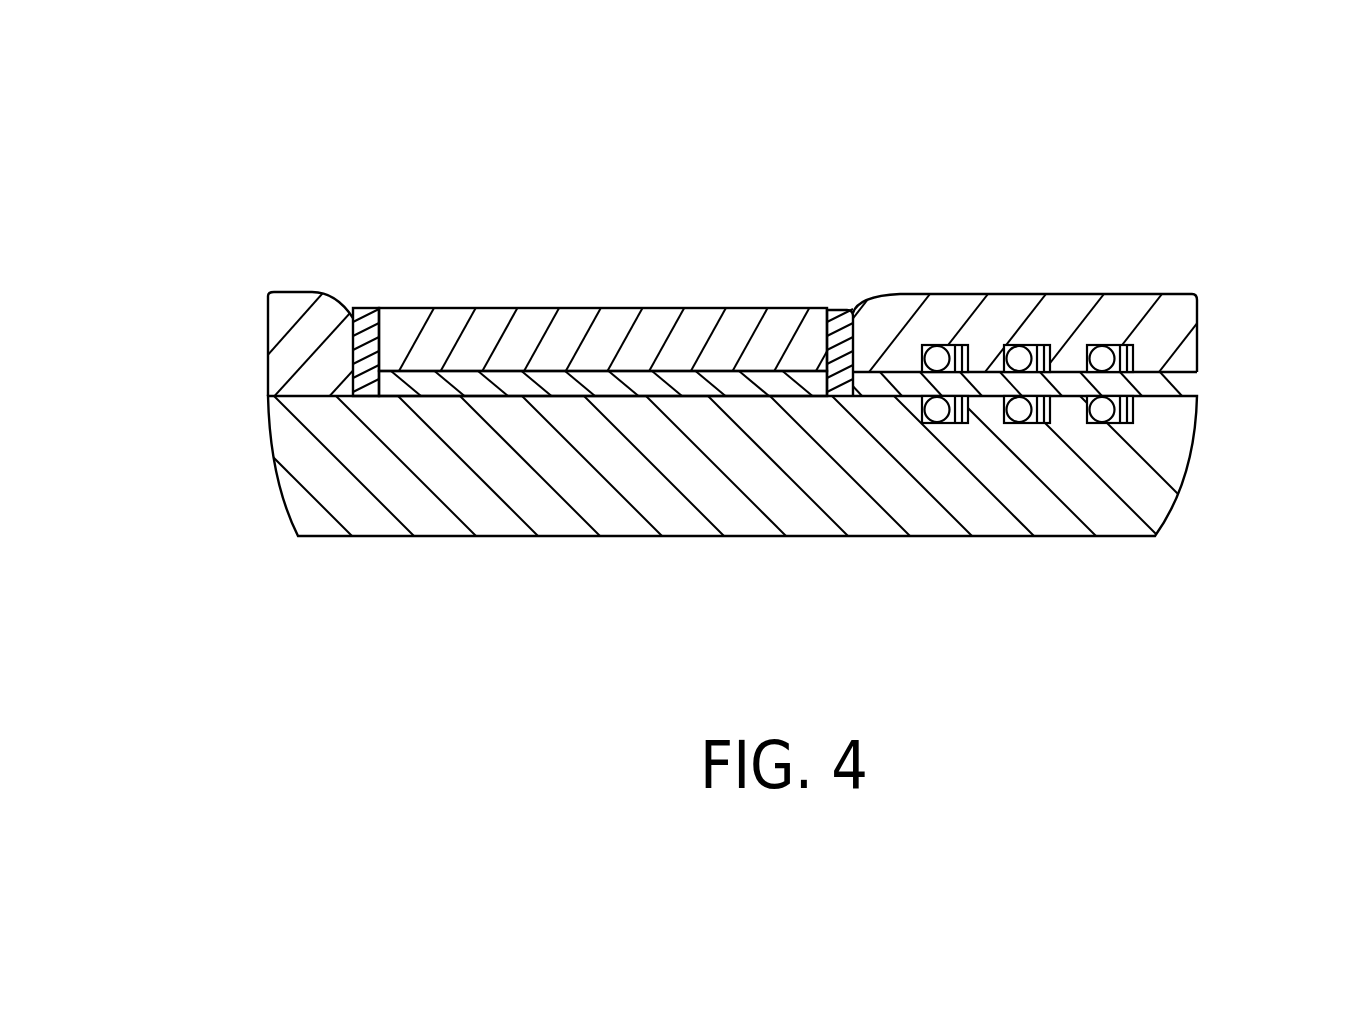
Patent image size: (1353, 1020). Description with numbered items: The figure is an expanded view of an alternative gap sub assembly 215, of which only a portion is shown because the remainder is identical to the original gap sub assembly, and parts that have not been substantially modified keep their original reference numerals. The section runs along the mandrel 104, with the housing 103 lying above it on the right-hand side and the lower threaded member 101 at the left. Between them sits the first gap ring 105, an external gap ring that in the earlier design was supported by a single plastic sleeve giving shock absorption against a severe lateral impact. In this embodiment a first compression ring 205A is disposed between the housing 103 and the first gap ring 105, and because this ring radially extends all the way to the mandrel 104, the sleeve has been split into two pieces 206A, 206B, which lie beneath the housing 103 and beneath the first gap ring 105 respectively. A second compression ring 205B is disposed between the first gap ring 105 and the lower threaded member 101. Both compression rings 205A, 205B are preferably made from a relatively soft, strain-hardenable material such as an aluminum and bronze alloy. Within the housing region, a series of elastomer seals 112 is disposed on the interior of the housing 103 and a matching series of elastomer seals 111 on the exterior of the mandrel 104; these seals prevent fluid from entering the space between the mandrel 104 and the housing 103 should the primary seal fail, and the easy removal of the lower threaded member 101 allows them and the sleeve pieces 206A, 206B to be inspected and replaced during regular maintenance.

The alternative gap sub assembly 215 is at (128, 173).
The lower threaded member 101 is at (292, 292).
The housing 103 is at (1172, 332).
The mandrel 104 is at (362, 538).
The first gap ring 105 is at (577, 308).
The elastomer seals 111 is at (945, 423).
The elastomer seals 112 is at (942, 347).
The first compression ring 205A is at (840, 332).
The second compression ring 205B is at (372, 322).
The first sleeve piece 206A is at (1172, 382).
The second sleeve piece 206B is at (713, 383).